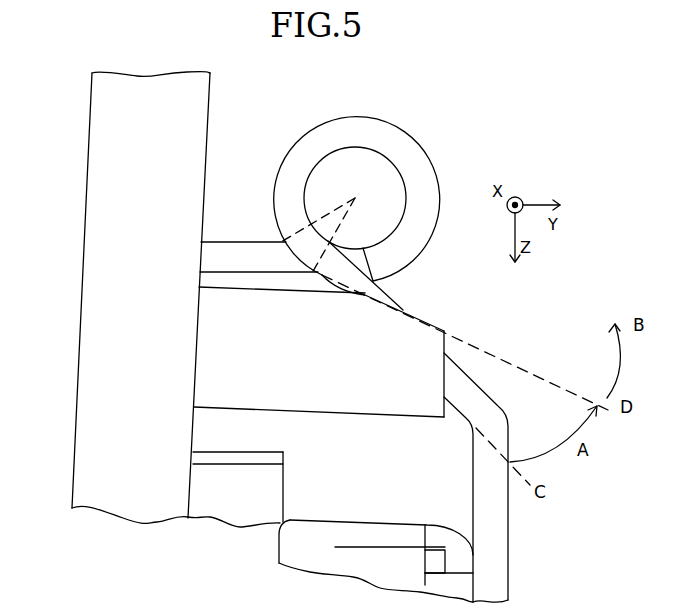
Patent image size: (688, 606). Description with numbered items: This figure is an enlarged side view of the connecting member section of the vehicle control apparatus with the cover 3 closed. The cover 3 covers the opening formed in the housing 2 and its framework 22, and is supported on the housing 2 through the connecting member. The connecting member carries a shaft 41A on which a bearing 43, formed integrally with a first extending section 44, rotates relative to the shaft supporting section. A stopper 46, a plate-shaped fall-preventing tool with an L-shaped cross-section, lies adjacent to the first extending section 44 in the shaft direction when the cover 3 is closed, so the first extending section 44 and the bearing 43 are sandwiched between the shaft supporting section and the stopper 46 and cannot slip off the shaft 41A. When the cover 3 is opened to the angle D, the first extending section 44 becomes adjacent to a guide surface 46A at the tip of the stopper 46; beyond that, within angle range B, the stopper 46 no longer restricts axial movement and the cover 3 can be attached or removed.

The housing 2 is at (155, 120).
The cover 3 is at (294, 542).
The framework 22 is at (211, 479).
The shaft 41A is at (342, 172).
The bearing 43 is at (398, 148).
The first extending section 44 is at (463, 387).
The stopper 46 is at (211, 338).
The guide surface 46A is at (421, 319).